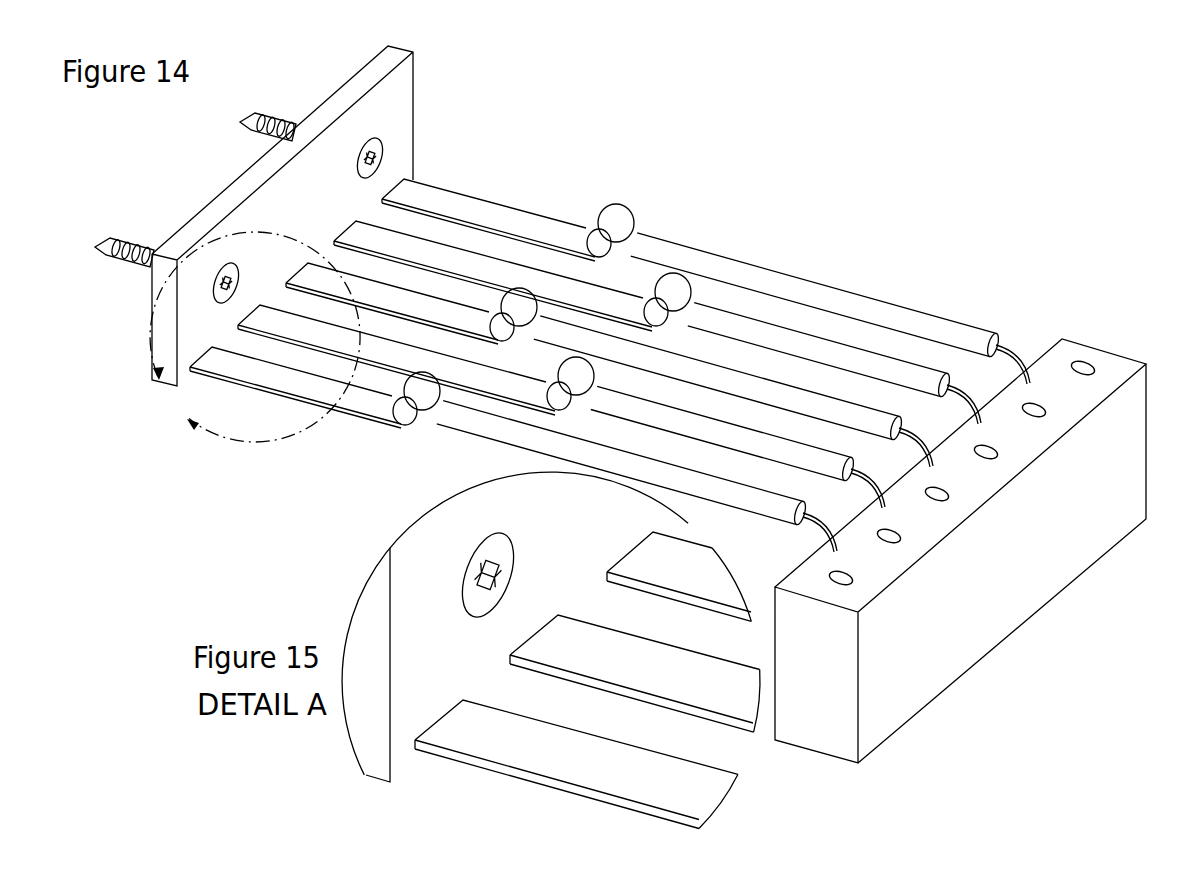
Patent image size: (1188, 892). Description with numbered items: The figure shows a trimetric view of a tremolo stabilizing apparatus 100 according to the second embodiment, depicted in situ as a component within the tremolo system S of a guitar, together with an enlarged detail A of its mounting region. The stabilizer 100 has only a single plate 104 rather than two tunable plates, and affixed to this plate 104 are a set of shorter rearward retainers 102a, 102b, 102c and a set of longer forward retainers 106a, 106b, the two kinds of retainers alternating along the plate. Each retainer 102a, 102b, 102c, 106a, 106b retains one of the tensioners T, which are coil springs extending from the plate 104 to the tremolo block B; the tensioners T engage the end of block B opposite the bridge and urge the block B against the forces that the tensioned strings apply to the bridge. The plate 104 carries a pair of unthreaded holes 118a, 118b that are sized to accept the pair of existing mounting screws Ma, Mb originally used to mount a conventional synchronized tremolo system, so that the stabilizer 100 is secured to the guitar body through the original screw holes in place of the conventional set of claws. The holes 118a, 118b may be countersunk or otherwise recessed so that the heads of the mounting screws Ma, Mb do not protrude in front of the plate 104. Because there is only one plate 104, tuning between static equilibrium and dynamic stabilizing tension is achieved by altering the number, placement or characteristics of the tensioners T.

In FIG. 14, the plate 104 is at (282, 216).
In FIG. 15, the plate 104 is at (452, 576).
In FIG. 14, the unthreaded hole 118a is at (238, 289).
In FIG. 15, the unthreaded hole 118a is at (512, 552).
In FIG. 14, the unthreaded hole 118b is at (358, 155).
In FIG. 14, the rearward retainer 102a is at (513, 449).
In FIG. 15, the rearward retainer 102a is at (576, 764).
In FIG. 14, the rearward retainer 102b is at (609, 365).
In FIG. 15, the rearward retainer 102b is at (679, 576).
In FIG. 14, the rearward retainer 102c is at (706, 281).
In FIG. 14, the forward retainer 106a is at (561, 406).
In FIG. 15, the forward retainer 106a is at (635, 673).
In FIG. 14, the forward retainer 106b is at (657, 322).
In FIG. 14, the tremolo stabilizing apparatus 100 is at (790, 198).
In FIG. 14, the tremolo system S is at (1082, 107).
In FIG. 14, the tensioners T is at (933, 288).
In FIG. 14, the mounting screw Ma is at (95, 245).
In FIG. 15, the mounting screw Ma is at (468, 593).
In FIG. 14, the mounting screw Mb is at (240, 121).
In FIG. 14, the detail area A is at (255, 337).
In FIG. 14, the tremolo block B is at (823, 683).